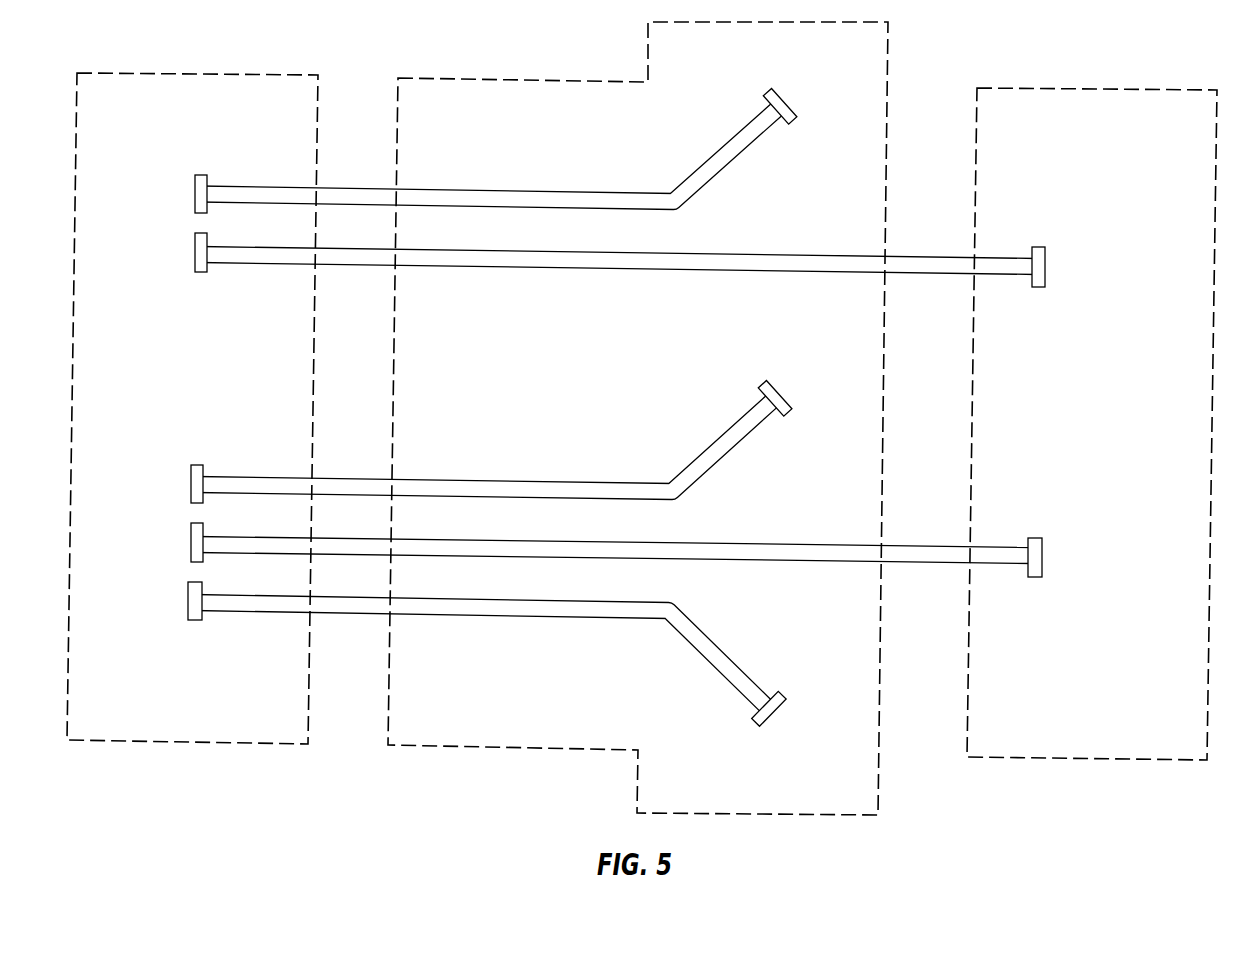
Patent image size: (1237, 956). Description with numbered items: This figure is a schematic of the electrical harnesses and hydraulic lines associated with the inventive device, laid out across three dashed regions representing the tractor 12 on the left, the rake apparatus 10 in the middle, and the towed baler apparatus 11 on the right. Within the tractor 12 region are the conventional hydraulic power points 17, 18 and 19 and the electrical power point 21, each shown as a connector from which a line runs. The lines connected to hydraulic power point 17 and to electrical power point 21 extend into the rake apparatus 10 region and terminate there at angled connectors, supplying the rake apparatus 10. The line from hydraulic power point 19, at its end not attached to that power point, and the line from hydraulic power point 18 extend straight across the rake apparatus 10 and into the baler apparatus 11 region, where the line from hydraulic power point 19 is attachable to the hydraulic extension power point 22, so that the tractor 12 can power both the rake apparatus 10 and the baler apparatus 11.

The rake apparatus 10 is at (634, 418).
The baler apparatus 11 is at (1087, 401).
The tractor 12 is at (189, 385).
The hydraulic power point 17 is at (460, 442).
The hydraulic power point 18 is at (585, 524).
The hydraulic power point 19 is at (457, 628).
The electrical power point 21 is at (464, 150).
The hydraulic extension power point 22 is at (588, 234).